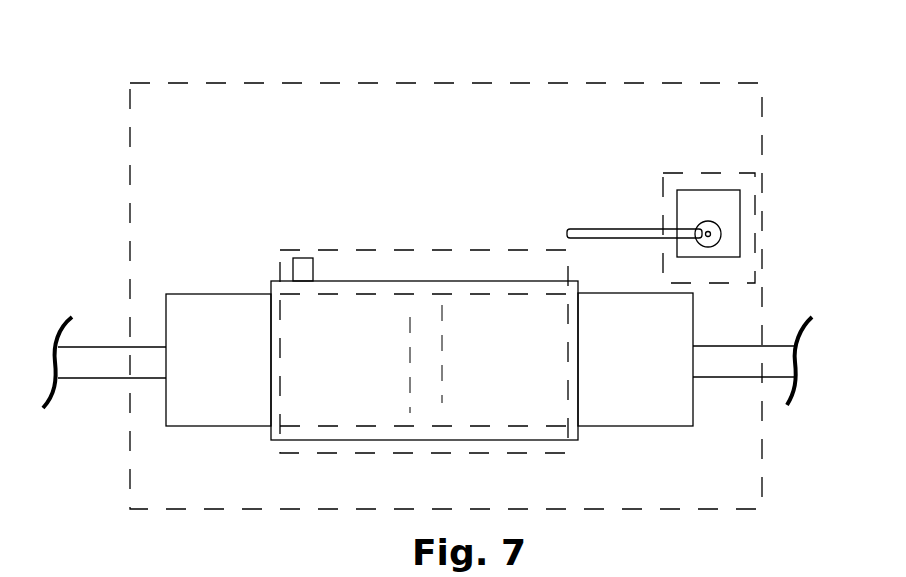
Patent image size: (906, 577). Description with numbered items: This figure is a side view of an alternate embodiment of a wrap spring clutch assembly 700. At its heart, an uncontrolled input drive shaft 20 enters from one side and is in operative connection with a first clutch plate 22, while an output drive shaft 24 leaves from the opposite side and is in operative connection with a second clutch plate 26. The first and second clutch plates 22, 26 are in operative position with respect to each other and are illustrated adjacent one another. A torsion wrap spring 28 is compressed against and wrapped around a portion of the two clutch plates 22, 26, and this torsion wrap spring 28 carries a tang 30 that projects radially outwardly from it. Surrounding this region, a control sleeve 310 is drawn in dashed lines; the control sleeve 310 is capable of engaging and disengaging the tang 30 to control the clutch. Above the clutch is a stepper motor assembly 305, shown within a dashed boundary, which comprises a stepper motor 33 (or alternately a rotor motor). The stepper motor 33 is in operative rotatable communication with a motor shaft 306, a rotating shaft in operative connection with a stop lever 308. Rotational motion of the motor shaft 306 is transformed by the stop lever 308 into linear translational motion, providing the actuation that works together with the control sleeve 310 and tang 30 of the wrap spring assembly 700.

The wrap spring assembly 700 is at (590, 83).
The input drive shaft 20 is at (115, 380).
The first clutch plate 22 is at (200, 427).
The torsion wrap spring 28 is at (430, 441).
The control sleeve 310 is at (513, 250).
The tang 30 is at (313, 265).
The second clutch plate 26 is at (670, 415).
The output drive shaft 24 is at (742, 367).
The stepper motor assembly 305 is at (667, 170).
The stepper motor 33 is at (708, 203).
The stop lever 308 is at (605, 229).
The motor shaft 306 is at (720, 235).